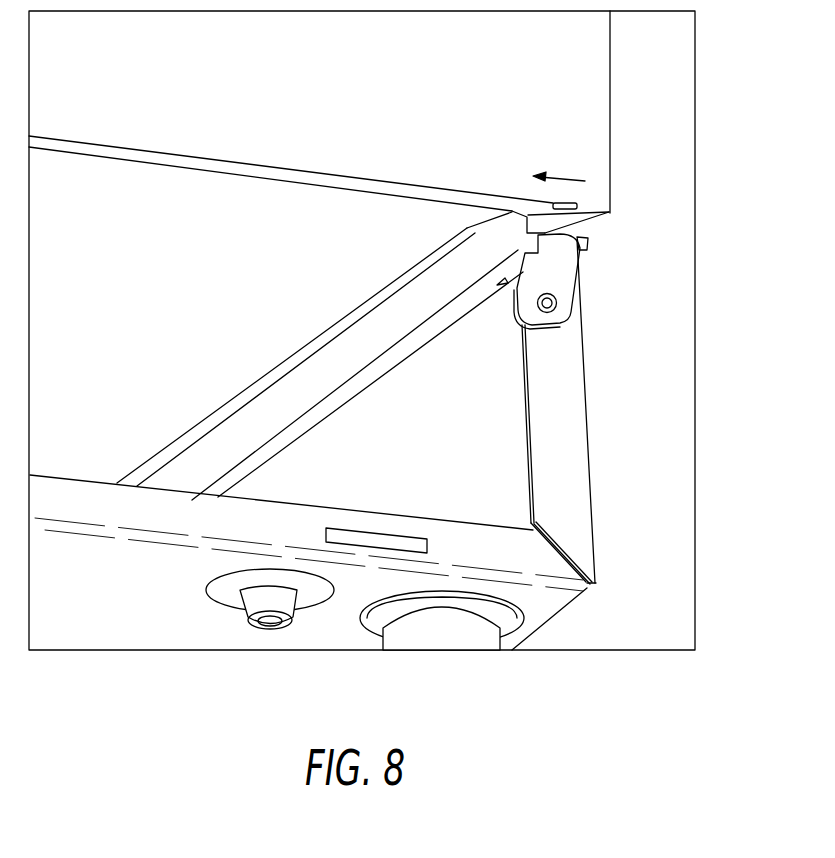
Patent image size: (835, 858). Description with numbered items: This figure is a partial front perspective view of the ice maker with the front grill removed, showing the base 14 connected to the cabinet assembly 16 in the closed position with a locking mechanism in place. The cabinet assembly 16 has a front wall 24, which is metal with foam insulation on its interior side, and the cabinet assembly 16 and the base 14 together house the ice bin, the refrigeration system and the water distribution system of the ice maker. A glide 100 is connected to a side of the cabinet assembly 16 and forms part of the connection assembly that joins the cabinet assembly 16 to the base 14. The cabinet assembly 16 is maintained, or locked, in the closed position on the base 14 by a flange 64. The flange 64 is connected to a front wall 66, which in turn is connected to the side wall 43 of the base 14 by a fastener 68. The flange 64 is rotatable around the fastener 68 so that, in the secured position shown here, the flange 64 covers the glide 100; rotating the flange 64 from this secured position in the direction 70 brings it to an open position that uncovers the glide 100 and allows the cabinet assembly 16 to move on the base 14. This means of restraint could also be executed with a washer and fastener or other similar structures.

The cabinet assembly 16 is at (519, 77).
The front wall 24 is at (565, 117).
The direction 70 is at (558, 173).
The glide 100 is at (527, 240).
The base 14 is at (573, 493).
The side wall 43 is at (498, 413).
The front wall 66 is at (562, 417).
The flange 64 is at (560, 270).
The fastener 68 is at (556, 296).